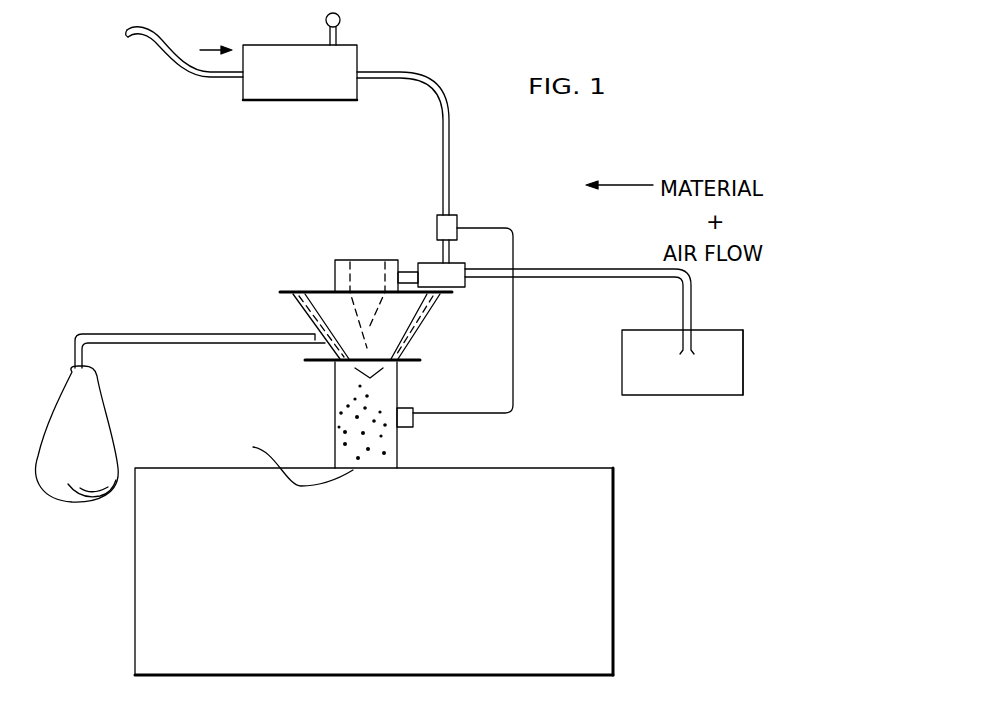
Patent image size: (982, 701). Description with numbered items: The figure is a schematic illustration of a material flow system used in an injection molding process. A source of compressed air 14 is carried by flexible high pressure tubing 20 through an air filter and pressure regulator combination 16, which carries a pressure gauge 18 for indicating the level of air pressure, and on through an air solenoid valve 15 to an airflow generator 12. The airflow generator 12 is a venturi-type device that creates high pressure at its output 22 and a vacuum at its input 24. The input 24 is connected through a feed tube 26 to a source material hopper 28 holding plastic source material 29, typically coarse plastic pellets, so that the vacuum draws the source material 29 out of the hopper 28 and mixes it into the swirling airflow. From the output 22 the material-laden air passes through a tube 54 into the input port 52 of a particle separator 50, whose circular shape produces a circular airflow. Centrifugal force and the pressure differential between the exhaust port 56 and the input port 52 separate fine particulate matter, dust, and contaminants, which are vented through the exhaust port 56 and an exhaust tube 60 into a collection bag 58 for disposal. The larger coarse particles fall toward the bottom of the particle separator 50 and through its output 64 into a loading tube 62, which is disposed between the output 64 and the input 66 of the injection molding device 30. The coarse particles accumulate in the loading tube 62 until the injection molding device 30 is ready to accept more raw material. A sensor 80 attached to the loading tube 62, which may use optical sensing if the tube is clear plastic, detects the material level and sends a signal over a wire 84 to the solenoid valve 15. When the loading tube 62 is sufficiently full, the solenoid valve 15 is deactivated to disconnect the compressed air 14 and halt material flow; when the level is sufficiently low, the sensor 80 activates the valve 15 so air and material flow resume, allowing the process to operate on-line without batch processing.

The airflow generator 12 is at (456, 278).
The source of compressed air 14 is at (113, 41).
The air solenoid valve 15 is at (438, 218).
The air filter and pressure regulator combination 16 is at (278, 97).
The pressure gauge 18 is at (325, 21).
The flexible high pressure tubing 20 is at (186, 72).
The output 22 is at (412, 252).
The input 24 is at (484, 291).
The feed tube 26 is at (609, 268).
The source material hopper 28 is at (640, 382).
The plastic source material 29 is at (729, 380).
The injection molding device 30 is at (146, 565).
The particle separator 50 is at (315, 301).
The input port 52 is at (382, 273).
The tube 54 is at (400, 277).
The exhaust port 56 is at (316, 331).
The collection bag 58 is at (66, 383).
The exhaust tube 60 is at (138, 338).
The loading tube 62 is at (342, 430).
The output 64 is at (392, 381).
The input 66 is at (285, 459).
The sensor 80 is at (406, 419).
The wire 84 is at (513, 366).